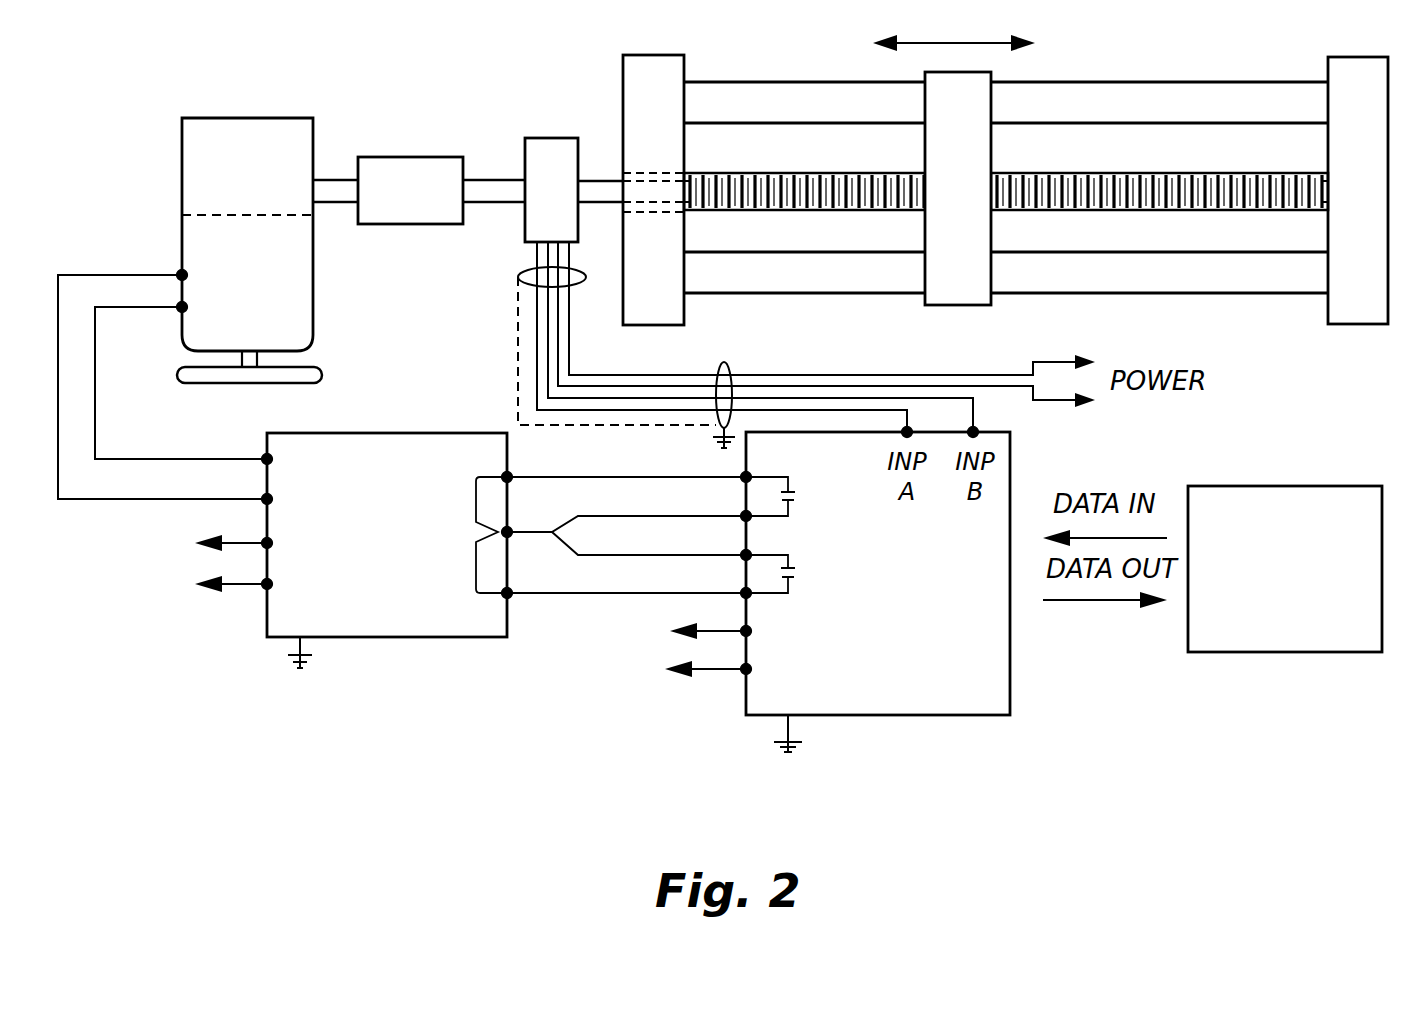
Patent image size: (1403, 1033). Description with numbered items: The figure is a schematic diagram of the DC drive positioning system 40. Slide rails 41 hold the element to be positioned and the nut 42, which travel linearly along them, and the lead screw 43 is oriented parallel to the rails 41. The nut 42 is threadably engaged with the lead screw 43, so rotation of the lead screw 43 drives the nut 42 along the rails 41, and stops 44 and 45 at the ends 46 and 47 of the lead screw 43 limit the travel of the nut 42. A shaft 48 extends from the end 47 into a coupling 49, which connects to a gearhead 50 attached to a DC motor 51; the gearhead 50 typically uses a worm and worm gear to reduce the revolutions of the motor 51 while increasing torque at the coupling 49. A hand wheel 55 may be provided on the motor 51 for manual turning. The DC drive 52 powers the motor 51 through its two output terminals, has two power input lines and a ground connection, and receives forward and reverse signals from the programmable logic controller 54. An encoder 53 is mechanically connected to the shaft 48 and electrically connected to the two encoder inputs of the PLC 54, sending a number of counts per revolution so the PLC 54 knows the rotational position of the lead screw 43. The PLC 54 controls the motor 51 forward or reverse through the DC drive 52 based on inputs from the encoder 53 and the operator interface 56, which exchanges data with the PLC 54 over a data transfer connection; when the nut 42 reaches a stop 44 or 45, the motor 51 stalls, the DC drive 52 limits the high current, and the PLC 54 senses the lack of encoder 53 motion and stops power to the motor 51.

The DC drive positioning system 40 is at (362, 712).
The slide rails 41 is at (789, 97).
The nut 42 is at (977, 204).
The lead screw 43 is at (788, 173).
The stop 44 is at (1377, 206).
The stop 45 is at (637, 131).
The end of lead screw 46 is at (1328, 172).
The end of lead screw 47 is at (685, 173).
The shaft 48 is at (490, 186).
The coupling 49 is at (430, 193).
The gearhead 50 is at (255, 181).
The DC motor 51 is at (215, 288).
The DC drive 52 is at (362, 619).
The encoder 53 is at (569, 213).
The programmable logic controller 54 is at (837, 642).
The hand wheel 55 is at (321, 373).
The operator interface 56 is at (1268, 605).